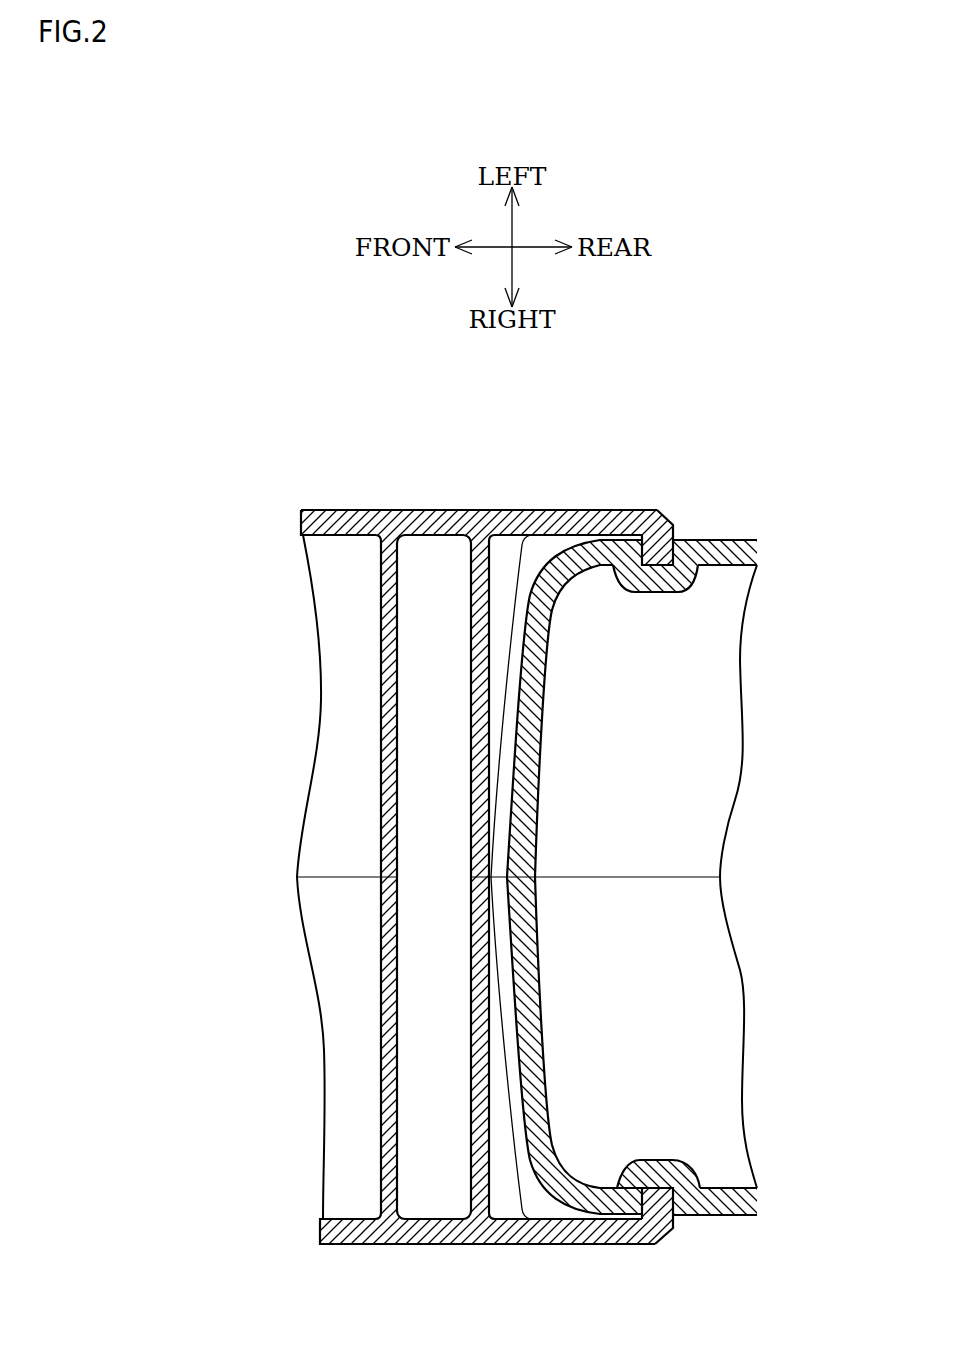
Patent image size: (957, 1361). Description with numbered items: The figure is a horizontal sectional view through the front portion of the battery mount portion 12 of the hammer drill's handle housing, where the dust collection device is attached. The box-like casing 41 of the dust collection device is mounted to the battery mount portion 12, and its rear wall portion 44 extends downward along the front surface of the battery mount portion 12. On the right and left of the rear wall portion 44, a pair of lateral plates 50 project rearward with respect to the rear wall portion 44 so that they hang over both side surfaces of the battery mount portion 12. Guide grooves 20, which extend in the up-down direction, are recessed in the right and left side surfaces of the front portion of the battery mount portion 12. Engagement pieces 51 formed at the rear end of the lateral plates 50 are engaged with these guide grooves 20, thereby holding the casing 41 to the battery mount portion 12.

The casing 41 is at (349, 494).
The rear wall portion 44 is at (428, 553).
The lateral plates 50 is at (518, 522).
The engagement pieces 51 is at (656, 545).
The guide grooves 20 is at (657, 568).
The battery mount portion 12 is at (733, 540).